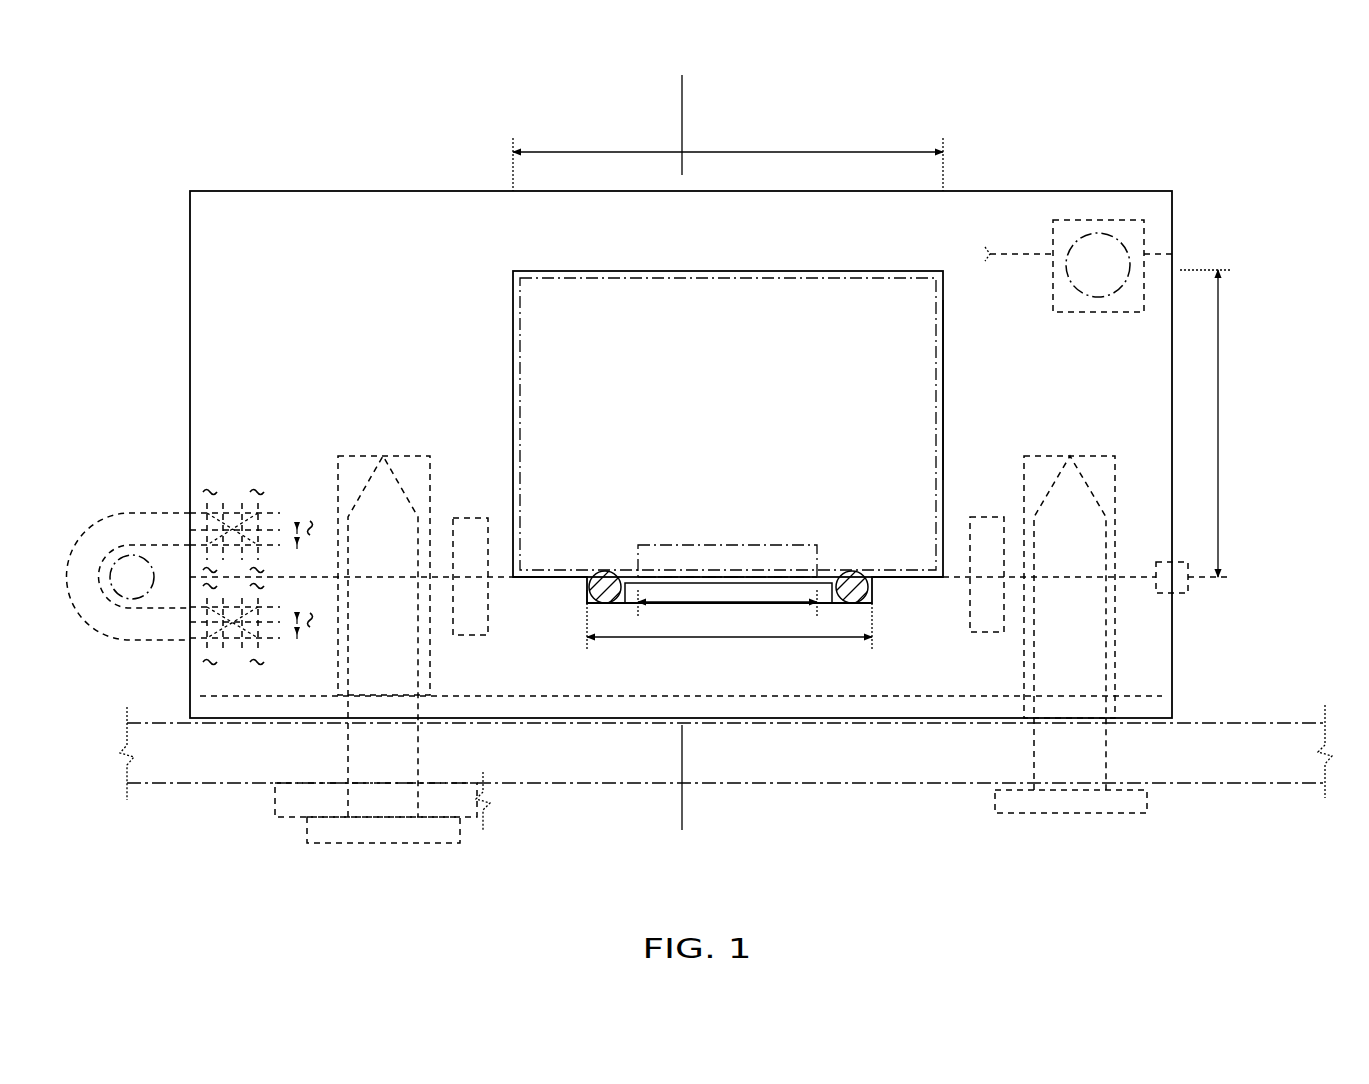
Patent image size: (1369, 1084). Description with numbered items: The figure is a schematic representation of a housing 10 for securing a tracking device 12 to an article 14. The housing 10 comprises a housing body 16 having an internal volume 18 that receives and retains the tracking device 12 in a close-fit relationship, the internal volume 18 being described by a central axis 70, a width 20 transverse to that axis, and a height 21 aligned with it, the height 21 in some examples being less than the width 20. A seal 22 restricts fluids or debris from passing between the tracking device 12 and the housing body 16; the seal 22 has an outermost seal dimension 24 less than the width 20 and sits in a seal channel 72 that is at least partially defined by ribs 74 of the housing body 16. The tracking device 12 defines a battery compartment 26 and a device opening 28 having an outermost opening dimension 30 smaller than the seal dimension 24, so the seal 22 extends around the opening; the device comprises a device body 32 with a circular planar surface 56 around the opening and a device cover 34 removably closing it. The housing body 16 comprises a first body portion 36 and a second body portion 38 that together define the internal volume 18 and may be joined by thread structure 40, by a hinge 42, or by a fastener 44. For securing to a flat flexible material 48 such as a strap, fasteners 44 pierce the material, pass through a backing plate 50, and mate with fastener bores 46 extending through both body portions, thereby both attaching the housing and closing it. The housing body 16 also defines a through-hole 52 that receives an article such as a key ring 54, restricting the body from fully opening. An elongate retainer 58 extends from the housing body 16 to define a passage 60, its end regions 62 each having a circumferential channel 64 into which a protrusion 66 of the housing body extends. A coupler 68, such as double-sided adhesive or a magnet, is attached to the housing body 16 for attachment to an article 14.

The housing 10 is at (1175, 82).
The tracking device 12 is at (915, 268).
The article 14 is at (135, 555).
The housing body 16 is at (1160, 188).
The internal volume 18 is at (648, 284).
The width 20 is at (727, 152).
The height 21 is at (1218, 425).
The seal 22 is at (598, 592).
The outermost seal dimension 24 is at (727, 640).
The battery compartment 26 is at (718, 545).
The device opening 28 is at (762, 568).
The outermost opening dimension 30 is at (768, 605).
The device body 32 is at (943, 392).
The device cover 34 is at (672, 570).
The first body portion 36 is at (1010, 262).
The second body portion 38 is at (1028, 255).
The thread structure 40 is at (485, 518).
The hinge 42 is at (1188, 590).
The fastener 44 is at (390, 845).
The fastener bore 46 is at (383, 456).
The flat flexible material 48 is at (1290, 787).
The backing plate 50 is at (280, 825).
The through-hole 52 is at (1100, 228).
The key ring 54 is at (1112, 228).
The circular planar surface 56 is at (875, 606).
The elongate retainer 58 is at (68, 545).
The passage 60 is at (160, 640).
The end regions 62 is at (270, 488).
The circumferential channel 64 is at (232, 522).
The protrusion 66 is at (190, 512).
The coupler 68 is at (935, 695).
The central axis 70 is at (681, 108).
The seal channel 72 is at (598, 604).
The rib 74 is at (930, 565).